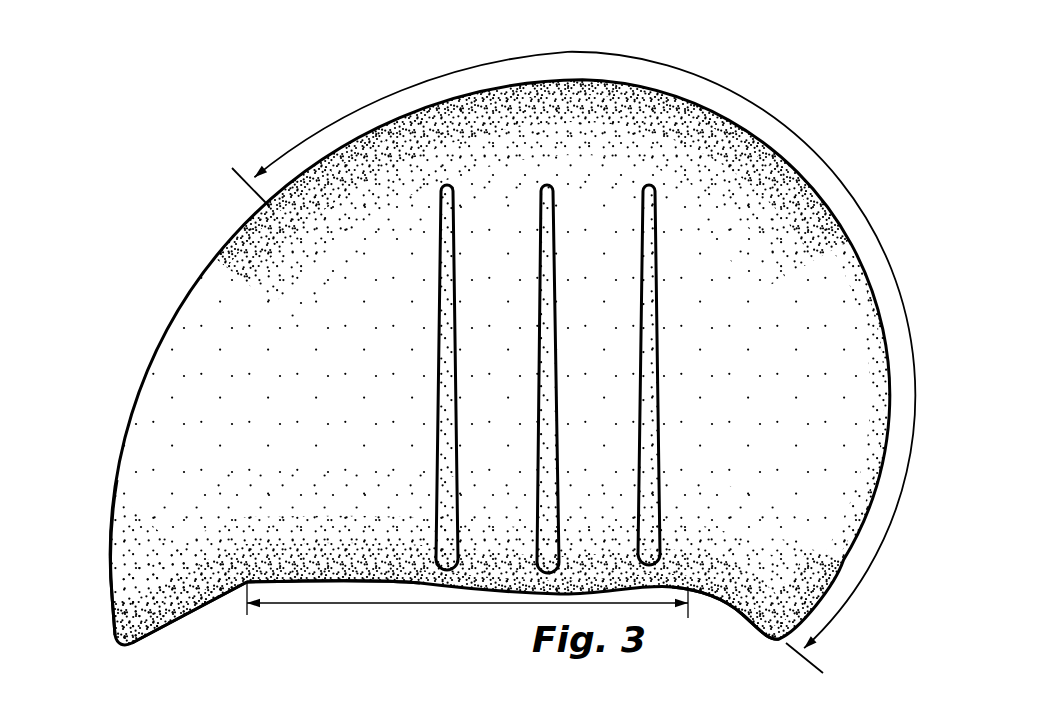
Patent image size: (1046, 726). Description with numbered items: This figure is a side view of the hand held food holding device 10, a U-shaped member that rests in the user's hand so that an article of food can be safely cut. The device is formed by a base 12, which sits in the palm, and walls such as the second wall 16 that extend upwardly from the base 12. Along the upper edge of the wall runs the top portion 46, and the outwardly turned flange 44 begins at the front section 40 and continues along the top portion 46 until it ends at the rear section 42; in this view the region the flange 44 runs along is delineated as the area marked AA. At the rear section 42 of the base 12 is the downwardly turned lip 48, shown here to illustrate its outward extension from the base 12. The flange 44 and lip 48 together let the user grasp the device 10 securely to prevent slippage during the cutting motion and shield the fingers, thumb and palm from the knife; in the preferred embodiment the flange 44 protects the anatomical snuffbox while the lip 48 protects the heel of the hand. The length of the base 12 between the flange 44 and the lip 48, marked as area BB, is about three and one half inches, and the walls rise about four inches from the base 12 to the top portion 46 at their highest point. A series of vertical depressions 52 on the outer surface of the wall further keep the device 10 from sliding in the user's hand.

The hand held food holding device 10 is at (312, 112).
The base 12 is at (325, 582).
The second wall 16 is at (363, 420).
The front section 40 is at (838, 573).
The rear section 42 is at (100, 590).
The outwardly turned flange 44 is at (741, 610).
The top portion 46 is at (557, 80).
The downwardly turned lip 48 is at (182, 613).
The vertical depressions 52 is at (652, 507).